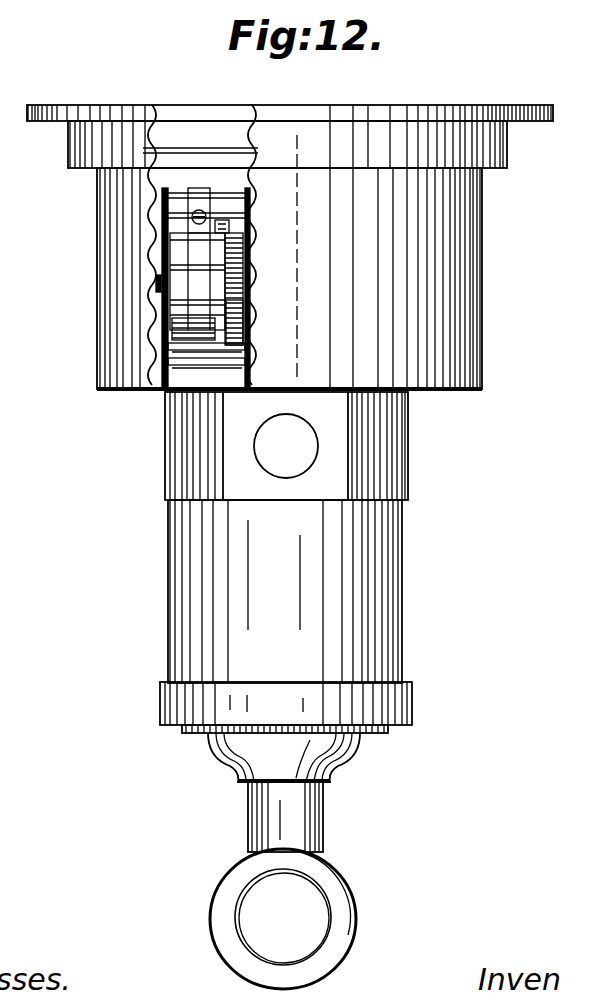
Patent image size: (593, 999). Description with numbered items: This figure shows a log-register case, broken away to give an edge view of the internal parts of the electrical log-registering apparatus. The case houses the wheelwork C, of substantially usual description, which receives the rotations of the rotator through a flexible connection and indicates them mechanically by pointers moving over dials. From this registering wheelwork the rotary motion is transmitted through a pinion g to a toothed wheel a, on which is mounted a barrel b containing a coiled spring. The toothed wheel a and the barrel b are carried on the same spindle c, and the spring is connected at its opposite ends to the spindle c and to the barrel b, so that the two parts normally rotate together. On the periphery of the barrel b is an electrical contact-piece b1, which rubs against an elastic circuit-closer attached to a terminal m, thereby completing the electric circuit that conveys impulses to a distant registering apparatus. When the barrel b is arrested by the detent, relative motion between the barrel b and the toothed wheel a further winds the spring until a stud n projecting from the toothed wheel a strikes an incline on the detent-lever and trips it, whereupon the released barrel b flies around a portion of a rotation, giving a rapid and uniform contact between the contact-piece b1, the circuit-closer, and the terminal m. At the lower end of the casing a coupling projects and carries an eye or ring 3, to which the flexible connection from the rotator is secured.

The terminal m is at (212, 198).
The stud n is at (229, 228).
The toothed wheel a is at (240, 267).
The barrel b is at (168, 261).
The spindle c is at (157, 283).
The electrical contact-piece b1 is at (172, 333).
The pinion g is at (243, 320).
The wheelwork C is at (403, 557).
The eye or ring 3 is at (357, 908).